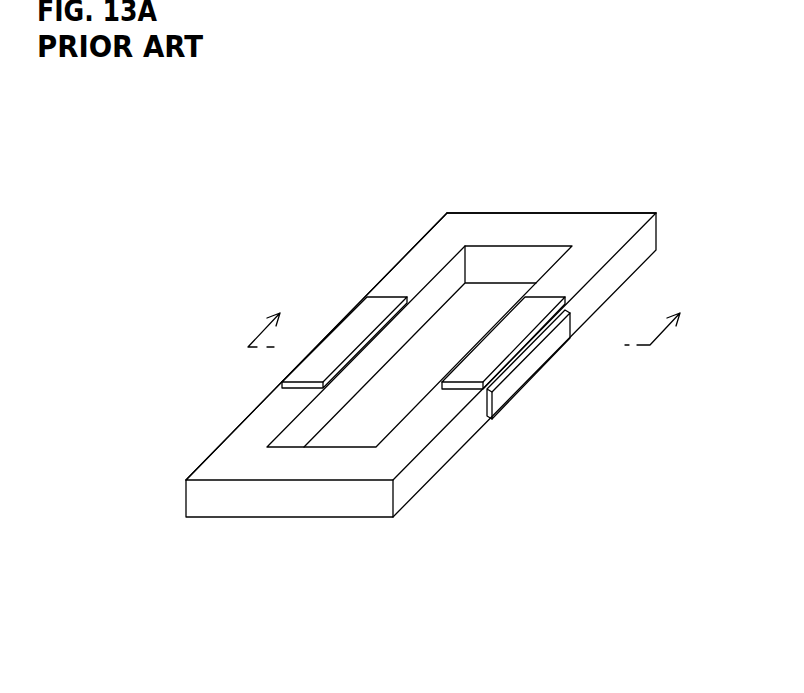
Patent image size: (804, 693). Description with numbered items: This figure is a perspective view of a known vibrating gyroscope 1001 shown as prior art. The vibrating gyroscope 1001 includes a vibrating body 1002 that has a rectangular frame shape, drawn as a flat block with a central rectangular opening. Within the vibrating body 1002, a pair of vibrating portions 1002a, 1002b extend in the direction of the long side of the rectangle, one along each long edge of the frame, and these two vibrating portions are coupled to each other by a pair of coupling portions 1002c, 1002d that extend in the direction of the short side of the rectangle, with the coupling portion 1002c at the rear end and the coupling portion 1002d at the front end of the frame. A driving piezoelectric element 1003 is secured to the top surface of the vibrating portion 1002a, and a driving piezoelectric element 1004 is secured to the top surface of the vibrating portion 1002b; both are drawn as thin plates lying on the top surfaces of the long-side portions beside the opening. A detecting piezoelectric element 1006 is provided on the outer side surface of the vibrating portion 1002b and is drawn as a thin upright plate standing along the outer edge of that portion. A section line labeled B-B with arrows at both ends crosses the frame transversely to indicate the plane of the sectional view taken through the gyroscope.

The vibrating gyroscope 1001 is at (375, 192).
The vibrating body 1002 is at (581, 195).
The vibrating portion 1002a is at (393, 270).
The vibrating portion 1002b is at (572, 275).
The coupling portion 1002c is at (517, 224).
The coupling portion 1002d is at (305, 468).
The driving piezoelectric element 1003 is at (292, 380).
The driving piezoelectric element 1004 is at (478, 362).
The detecting piezoelectric element 1006 is at (530, 368).